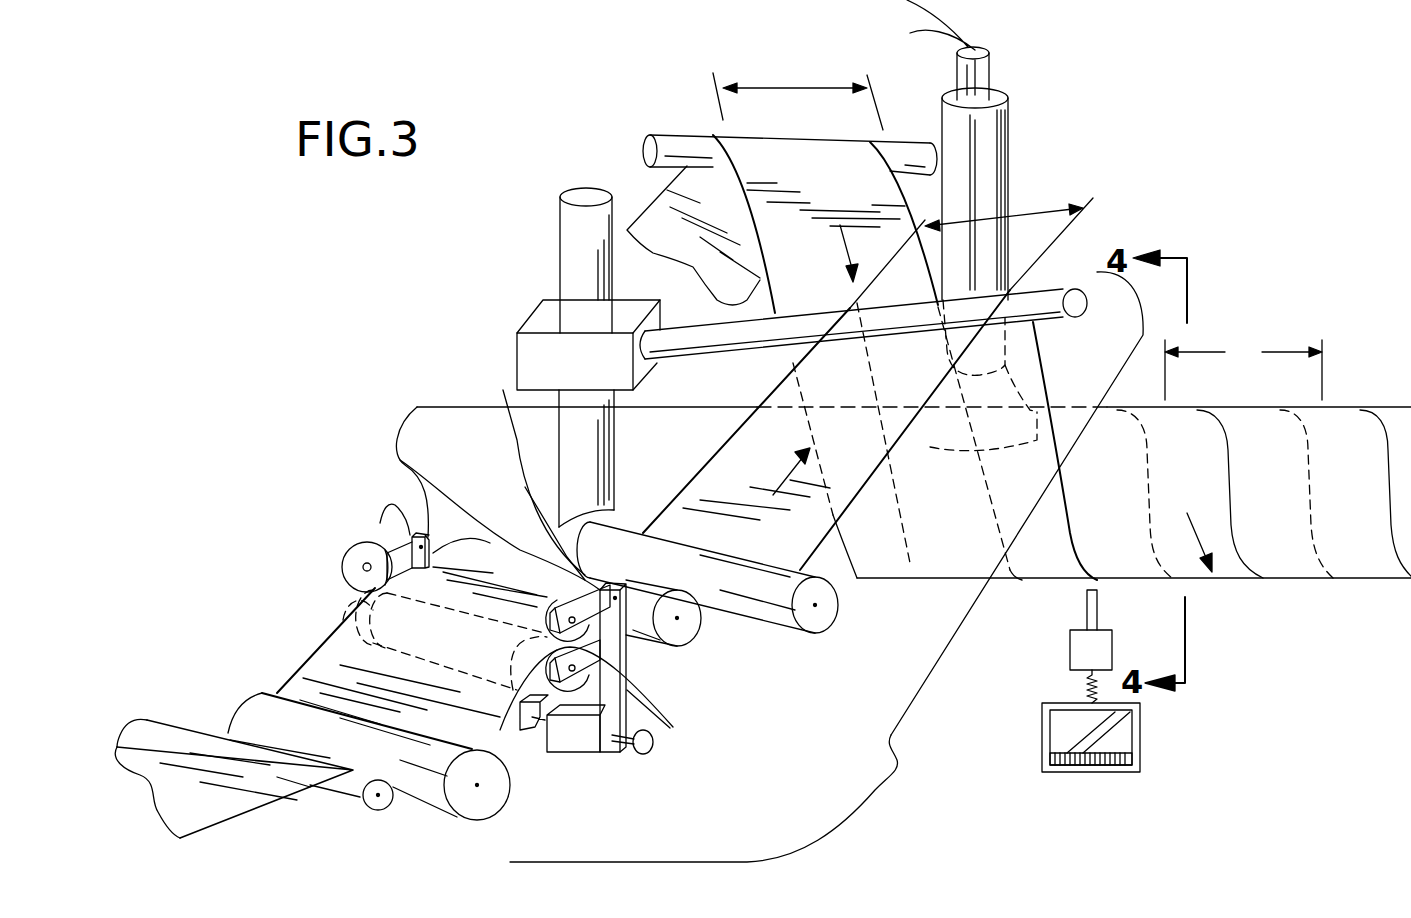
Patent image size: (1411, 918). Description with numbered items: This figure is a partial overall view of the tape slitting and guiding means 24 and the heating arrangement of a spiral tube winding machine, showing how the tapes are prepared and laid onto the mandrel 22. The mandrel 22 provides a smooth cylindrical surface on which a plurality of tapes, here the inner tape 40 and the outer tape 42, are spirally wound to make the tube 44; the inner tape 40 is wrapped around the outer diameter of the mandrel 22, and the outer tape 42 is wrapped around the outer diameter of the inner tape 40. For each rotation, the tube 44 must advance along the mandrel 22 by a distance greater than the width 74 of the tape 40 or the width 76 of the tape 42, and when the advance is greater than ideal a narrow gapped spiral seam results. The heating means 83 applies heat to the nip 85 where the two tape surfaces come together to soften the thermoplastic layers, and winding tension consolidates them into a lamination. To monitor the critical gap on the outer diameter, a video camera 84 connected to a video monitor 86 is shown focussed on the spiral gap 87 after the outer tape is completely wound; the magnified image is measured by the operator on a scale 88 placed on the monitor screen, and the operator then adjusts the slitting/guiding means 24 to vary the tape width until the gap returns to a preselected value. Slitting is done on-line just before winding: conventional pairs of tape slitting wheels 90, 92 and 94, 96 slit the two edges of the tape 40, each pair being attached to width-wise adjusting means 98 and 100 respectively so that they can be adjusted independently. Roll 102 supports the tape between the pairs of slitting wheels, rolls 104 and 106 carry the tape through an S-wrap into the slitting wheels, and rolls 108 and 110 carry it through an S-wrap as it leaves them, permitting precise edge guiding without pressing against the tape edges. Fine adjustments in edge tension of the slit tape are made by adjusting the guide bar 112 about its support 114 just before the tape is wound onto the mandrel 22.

The mandrel 22 is at (417, 407).
The tape slitting/guiding means 24 is at (893, 765).
The inner tape 40 is at (770, 440).
The outer tape 42 is at (870, 158).
The tube 44 is at (1225, 590).
The width of tape 40 74 is at (1013, 213).
The width of tape 42 76 is at (803, 85).
The heating means 83 is at (1012, 122).
The video camera 84 is at (1070, 650).
The nip 85 is at (1060, 455).
The video monitor 86 is at (1142, 745).
The spiral gap 87 is at (1085, 735).
The scale 88 is at (1135, 770).
The tape slitting wheel 90 is at (400, 460).
The tape slitting wheel 92 is at (559, 690).
The tape slitting wheel 94 is at (352, 548).
The tape slitting wheel 96 is at (312, 625).
The width-wise adjusting means 98 is at (503, 390).
The width-wise adjusting means 100 is at (410, 533).
The roll 102 is at (535, 700).
The roll 104 is at (477, 813).
The roll 106 is at (383, 813).
The roll 108 is at (690, 645).
The roll 110 is at (818, 633).
The guide bar 112 is at (700, 318).
The support 114 is at (558, 247).